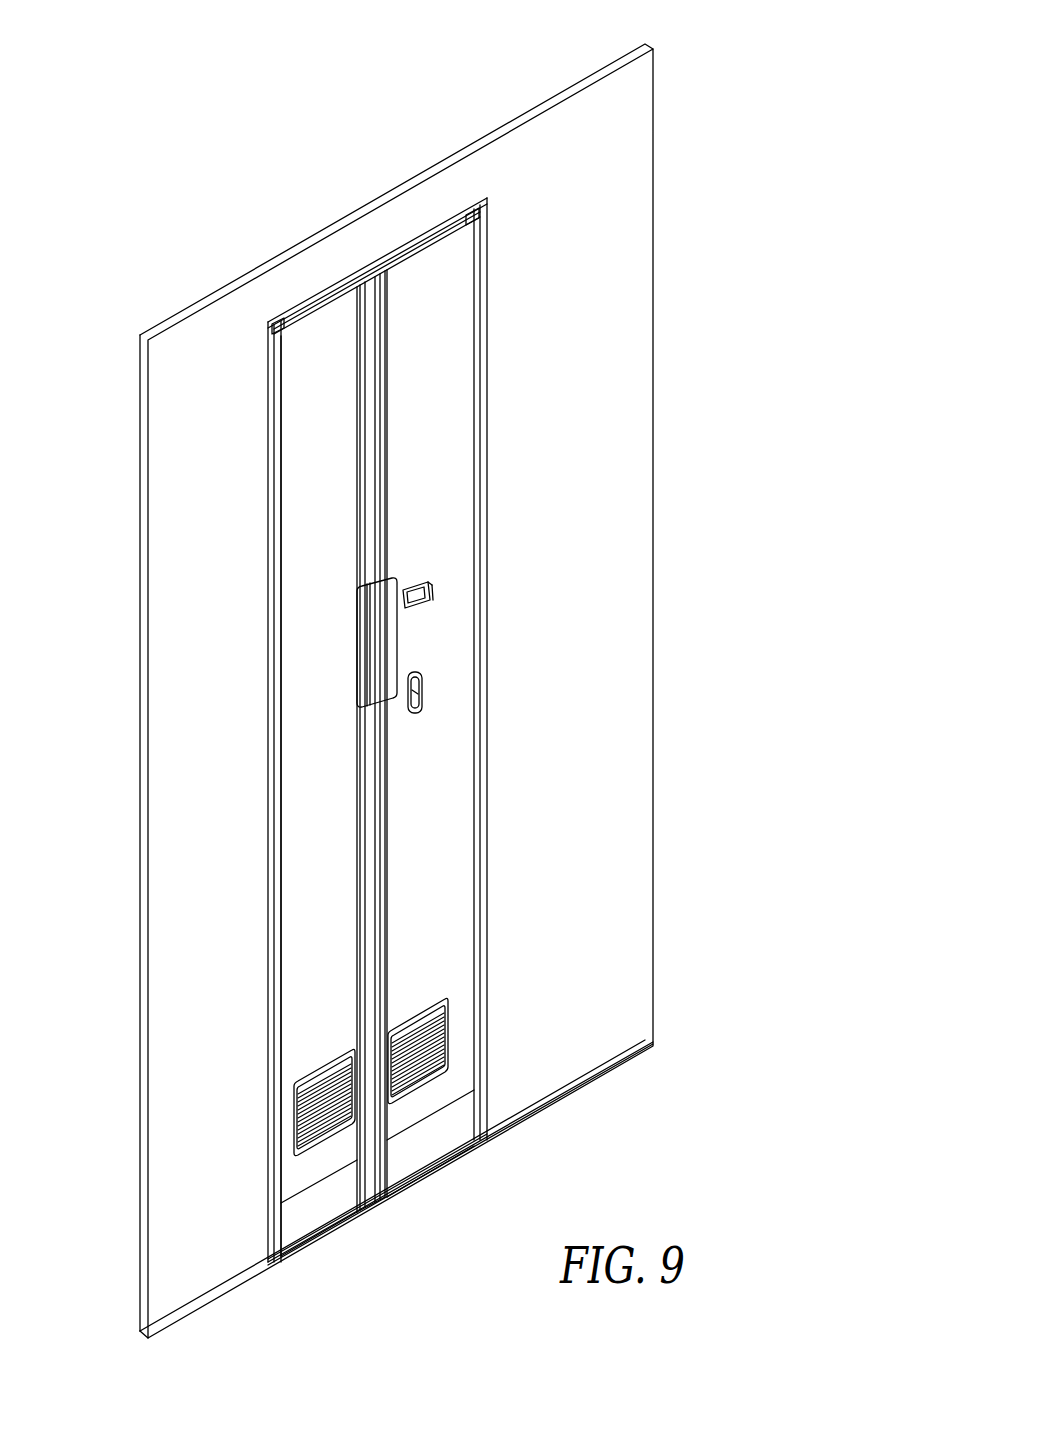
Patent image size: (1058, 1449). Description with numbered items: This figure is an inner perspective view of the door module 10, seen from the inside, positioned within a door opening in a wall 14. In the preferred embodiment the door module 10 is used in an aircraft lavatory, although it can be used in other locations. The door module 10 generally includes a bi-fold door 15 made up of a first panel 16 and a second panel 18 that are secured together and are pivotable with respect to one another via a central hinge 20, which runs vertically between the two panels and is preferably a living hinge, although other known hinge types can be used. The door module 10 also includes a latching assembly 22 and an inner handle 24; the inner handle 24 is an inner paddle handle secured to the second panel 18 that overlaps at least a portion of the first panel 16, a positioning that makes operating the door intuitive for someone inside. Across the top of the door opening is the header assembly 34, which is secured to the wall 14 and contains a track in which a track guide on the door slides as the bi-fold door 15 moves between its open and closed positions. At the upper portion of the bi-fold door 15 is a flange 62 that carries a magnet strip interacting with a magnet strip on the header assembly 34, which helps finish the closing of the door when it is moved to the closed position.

The door module 10 is at (418, 678).
The wall 14 is at (183, 792).
The bi-fold door 15 is at (426, 720).
The first panel 16 is at (446, 364).
The second panel 18 is at (330, 432).
The central hinge 20 is at (372, 835).
The latching assembly 22 is at (420, 591).
The inner handle 24 is at (390, 637).
The header assembly 34 is at (355, 282).
The flange 62 is at (445, 233).